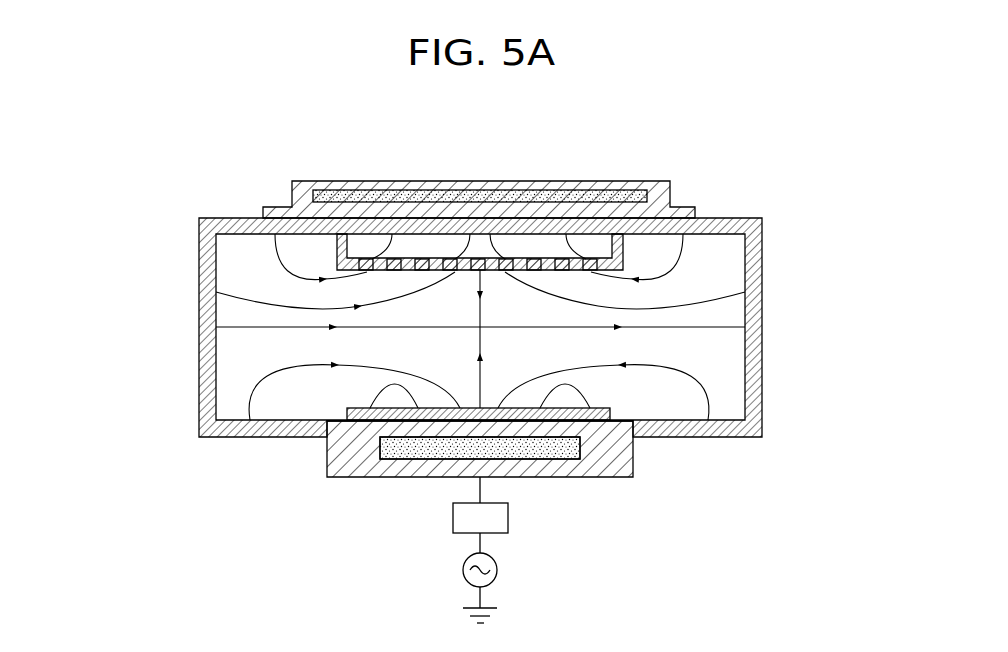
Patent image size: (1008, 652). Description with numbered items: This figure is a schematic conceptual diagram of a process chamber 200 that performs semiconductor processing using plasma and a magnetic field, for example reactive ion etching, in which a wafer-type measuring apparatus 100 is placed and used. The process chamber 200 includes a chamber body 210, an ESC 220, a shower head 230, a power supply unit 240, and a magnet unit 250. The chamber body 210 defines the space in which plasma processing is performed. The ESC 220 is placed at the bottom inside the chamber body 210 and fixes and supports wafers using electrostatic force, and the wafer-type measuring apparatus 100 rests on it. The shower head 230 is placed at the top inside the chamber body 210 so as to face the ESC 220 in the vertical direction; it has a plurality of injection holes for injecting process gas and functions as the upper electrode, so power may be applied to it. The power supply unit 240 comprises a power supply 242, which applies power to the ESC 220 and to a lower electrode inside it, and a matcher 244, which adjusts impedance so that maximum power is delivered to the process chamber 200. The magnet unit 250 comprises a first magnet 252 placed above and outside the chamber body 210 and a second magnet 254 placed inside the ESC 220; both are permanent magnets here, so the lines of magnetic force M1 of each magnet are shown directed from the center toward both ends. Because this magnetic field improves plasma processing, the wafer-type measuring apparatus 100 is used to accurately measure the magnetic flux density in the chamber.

The process chamber 200 is at (743, 120).
The chamber body 210 is at (755, 325).
The ESC 220 is at (625, 460).
The shower head 230 is at (623, 249).
The power supply unit 240 is at (549, 550).
The power supply 242 is at (498, 570).
The matcher 244 is at (510, 518).
The magnet unit 250 is at (479, 335).
The first magnet 252 is at (478, 182).
The second magnet 254 is at (397, 478).
The wafer-type measuring apparatus 100 is at (655, 418).
The lines of magnetic force M1 is at (216, 291).